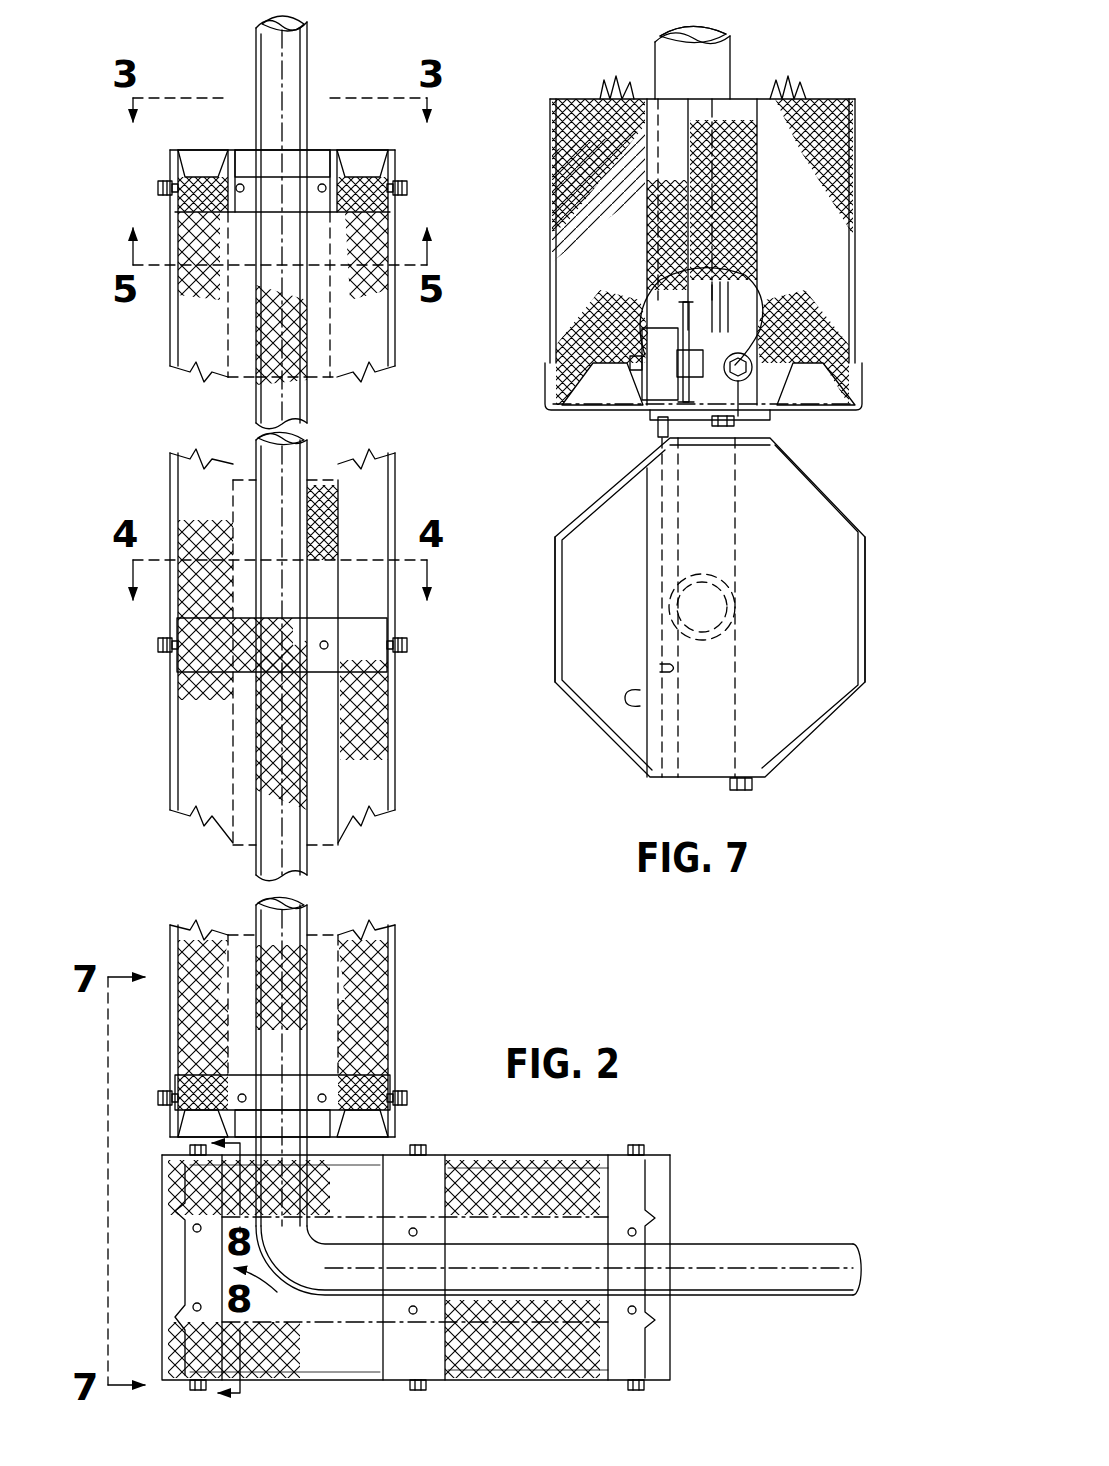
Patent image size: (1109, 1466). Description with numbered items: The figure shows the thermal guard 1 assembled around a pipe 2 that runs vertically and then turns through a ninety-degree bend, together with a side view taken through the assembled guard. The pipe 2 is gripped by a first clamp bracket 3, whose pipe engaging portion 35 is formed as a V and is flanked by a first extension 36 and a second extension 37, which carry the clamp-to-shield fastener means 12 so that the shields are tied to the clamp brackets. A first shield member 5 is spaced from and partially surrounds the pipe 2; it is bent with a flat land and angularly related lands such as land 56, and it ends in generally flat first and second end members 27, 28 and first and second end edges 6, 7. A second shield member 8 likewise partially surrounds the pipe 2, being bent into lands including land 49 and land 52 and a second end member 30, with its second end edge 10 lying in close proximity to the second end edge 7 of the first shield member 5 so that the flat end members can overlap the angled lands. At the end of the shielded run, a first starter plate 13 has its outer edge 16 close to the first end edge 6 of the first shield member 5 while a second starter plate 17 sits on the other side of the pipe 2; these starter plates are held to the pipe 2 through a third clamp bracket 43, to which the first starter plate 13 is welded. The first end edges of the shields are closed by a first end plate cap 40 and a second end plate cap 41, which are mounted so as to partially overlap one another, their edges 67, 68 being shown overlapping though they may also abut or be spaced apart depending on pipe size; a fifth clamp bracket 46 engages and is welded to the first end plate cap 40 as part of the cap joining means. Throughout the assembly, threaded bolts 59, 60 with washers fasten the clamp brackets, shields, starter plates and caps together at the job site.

In FIG. 2, the thermal guard 1 is at (152, 449).
In FIG. 7, the thermal guard 1 is at (874, 148).
In FIG. 2, the pipe 2 is at (315, 396).
In FIG. 7, the pipe 2 is at (650, 57).
In FIG. 2, the first clamp bracket 3 is at (346, 600).
In FIG. 2, the first shield member 5 is at (382, 1012).
In FIG. 7, the first shield member 5 is at (864, 250).
In FIG. 2, the first end edge 6 is at (392, 152).
In FIG. 2, the second end edge 7 is at (410, 1122).
In FIG. 7, the second end edge 7 is at (856, 413).
In FIG. 7, the second shield member 8 is at (548, 200).
In FIG. 7, the second end edge 10 is at (552, 414).
In FIG. 2, the clamp-to-shield fastener means 12 is at (172, 1088).
In FIG. 7, the clamp-to-shield fastener means 12 is at (736, 300).
In FIG. 2, the first starter plate 13 is at (348, 138).
In FIG. 7, the first starter plate 13 is at (822, 424).
In FIG. 2, the outer edge 16 is at (360, 150).
In FIG. 7, the second starter plate 17 is at (618, 412).
In FIG. 2, the first end member 27 is at (392, 330).
In FIG. 2, the second end member 28 is at (172, 305).
In FIG. 7, the second end member 28 is at (742, 99).
In FIG. 7, the second end member 30 is at (655, 290).
In FIG. 2, the pipe engaging portion 35 is at (312, 198).
In FIG. 2, the first extension 36 is at (348, 214).
In FIG. 2, the second extension 37 is at (208, 176).
In FIG. 2, the first end plate cap 40 is at (156, 1230).
In FIG. 7, the first end plate cap 40 is at (823, 633).
In FIG. 7, the second end plate cap 41 is at (622, 627).
In FIG. 2, the third clamp bracket 43 is at (314, 240).
In FIG. 2, the fifth clamp bracket 46 is at (265, 1273).
In FIG. 7, the land 49 is at (580, 120).
In FIG. 7, the land 52 is at (674, 45).
In FIG. 7, the land 56 is at (826, 99).
In FIG. 2, the threaded bolt 59 is at (245, 214).
In FIG. 2, the threaded bolt 60 is at (156, 189).
In FIG. 7, the threaded bolt 60 is at (740, 422).
In FIG. 7, the edge 67 is at (638, 700).
In FIG. 7, the edge 68 is at (660, 672).